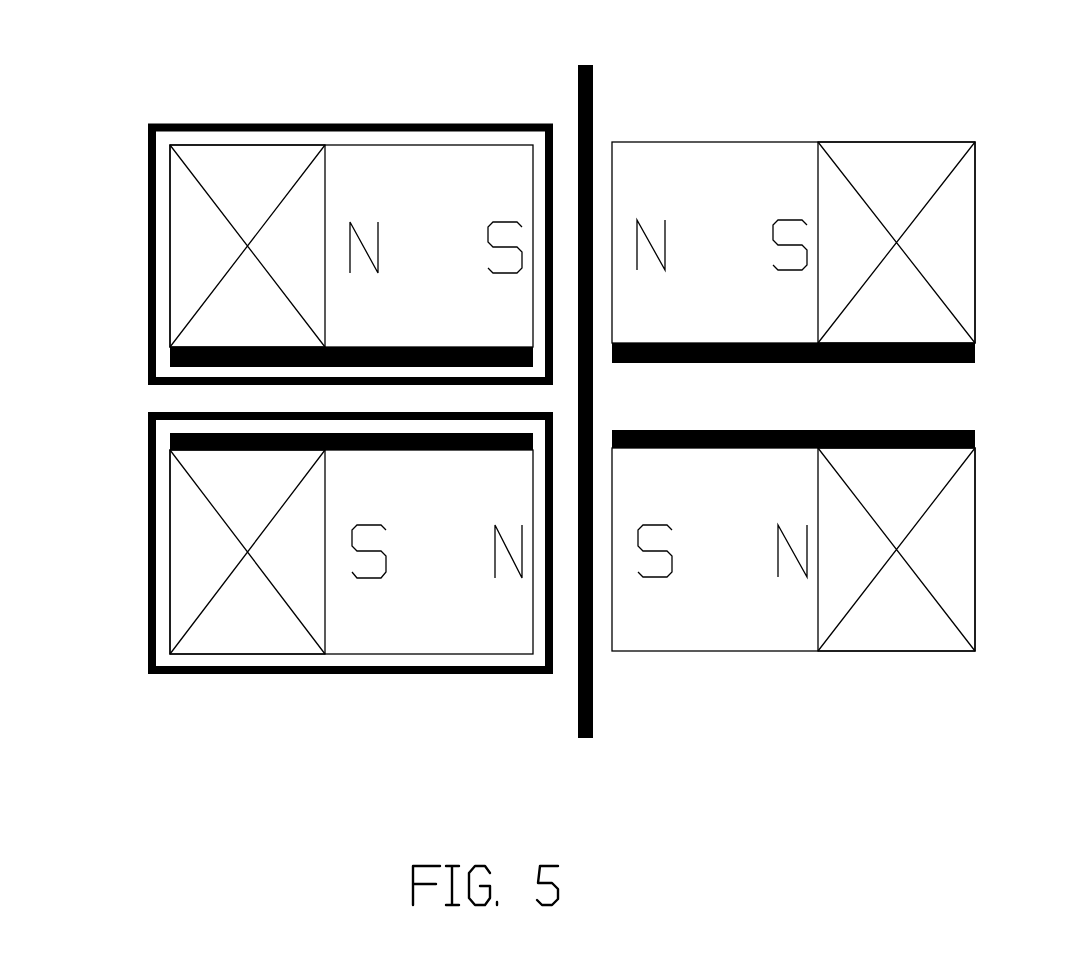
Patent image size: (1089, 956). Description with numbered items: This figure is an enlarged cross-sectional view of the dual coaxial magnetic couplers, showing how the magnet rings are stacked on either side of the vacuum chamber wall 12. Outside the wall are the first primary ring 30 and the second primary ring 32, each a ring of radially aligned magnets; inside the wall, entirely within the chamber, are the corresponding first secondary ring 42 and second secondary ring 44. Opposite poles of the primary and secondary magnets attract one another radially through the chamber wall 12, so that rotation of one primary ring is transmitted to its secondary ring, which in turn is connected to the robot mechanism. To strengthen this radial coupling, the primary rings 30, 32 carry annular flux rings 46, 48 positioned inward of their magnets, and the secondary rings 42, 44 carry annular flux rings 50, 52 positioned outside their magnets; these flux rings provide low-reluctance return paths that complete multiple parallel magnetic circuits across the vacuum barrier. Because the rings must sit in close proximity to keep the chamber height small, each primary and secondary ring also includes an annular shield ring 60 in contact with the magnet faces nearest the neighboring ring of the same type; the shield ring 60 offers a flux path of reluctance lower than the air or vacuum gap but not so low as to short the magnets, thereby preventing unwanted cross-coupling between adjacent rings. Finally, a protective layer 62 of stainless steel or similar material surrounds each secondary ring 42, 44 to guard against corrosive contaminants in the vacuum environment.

The vacuum chamber wall 12 is at (593, 702).
The first primary ring 30 is at (768, 117).
The second primary ring 32 is at (768, 684).
The first secondary ring 42 is at (420, 96).
The second secondary ring 44 is at (378, 700).
The annular flux ring 46 is at (975, 208).
The annular flux ring 48 is at (975, 512).
The annular flux ring 50 is at (231, 145).
The annular flux ring 52 is at (203, 654).
The annular shield ring 60 is at (220, 436).
The protective layer 62 is at (148, 233).